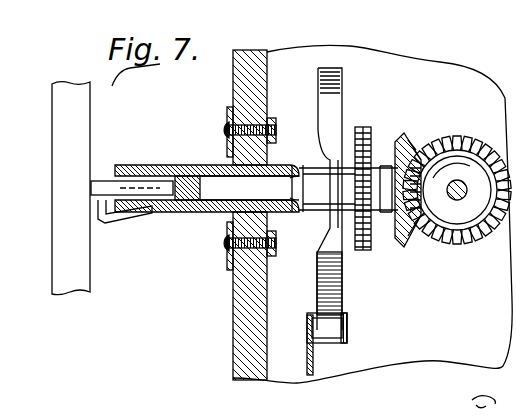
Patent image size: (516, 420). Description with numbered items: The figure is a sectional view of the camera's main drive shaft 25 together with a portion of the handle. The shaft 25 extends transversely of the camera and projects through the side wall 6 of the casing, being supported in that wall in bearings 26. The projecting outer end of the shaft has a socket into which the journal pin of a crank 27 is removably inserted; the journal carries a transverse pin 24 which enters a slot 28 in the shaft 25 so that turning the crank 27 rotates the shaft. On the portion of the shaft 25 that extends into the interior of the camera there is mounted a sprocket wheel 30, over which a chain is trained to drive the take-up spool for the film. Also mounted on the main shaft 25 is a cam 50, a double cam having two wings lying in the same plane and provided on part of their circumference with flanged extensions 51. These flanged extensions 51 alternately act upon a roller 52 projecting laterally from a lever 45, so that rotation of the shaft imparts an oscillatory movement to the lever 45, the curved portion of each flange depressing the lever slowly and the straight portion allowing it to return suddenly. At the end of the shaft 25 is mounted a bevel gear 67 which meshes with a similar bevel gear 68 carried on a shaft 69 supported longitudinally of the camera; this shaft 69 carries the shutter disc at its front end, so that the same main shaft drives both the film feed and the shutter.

The side wall 6 is at (233, 338).
The transverse pin 24 is at (135, 176).
The shaft 25 is at (220, 169).
The bearings 26 is at (232, 213).
The crank 27 is at (60, 206).
The slot 28 is at (120, 180).
The sprocket wheel 30 is at (368, 140).
The lever 45 is at (312, 376).
The cam 50 is at (316, 271).
The flanged extensions 51 is at (313, 291).
The roller 52 is at (348, 343).
The bevel gear 67 is at (408, 146).
The bevel gear 68 is at (457, 177).
The shaft 69 is at (463, 198).